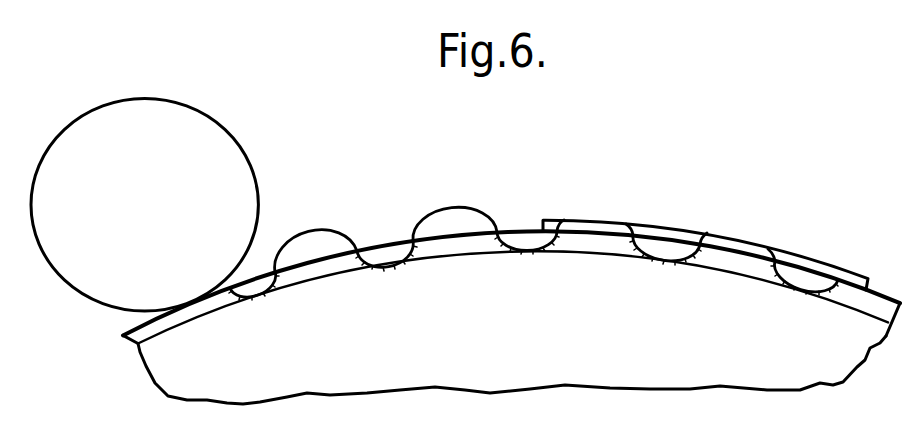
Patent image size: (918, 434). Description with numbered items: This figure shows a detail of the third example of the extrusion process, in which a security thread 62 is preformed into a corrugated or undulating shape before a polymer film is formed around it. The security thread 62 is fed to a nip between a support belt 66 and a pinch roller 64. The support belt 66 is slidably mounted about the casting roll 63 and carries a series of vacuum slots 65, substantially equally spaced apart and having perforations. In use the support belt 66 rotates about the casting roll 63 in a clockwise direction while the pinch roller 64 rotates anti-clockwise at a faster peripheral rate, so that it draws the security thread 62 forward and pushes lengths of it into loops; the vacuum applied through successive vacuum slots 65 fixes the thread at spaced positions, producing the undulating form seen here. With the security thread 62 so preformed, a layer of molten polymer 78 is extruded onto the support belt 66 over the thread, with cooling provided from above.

The security thread 62 is at (470, 215).
The casting roll 63 is at (528, 325).
The pinch roller 64 is at (217, 147).
The vacuum slots 65 is at (374, 266).
The support belt 66 is at (748, 265).
The layer of molten polymer 78 is at (657, 223).